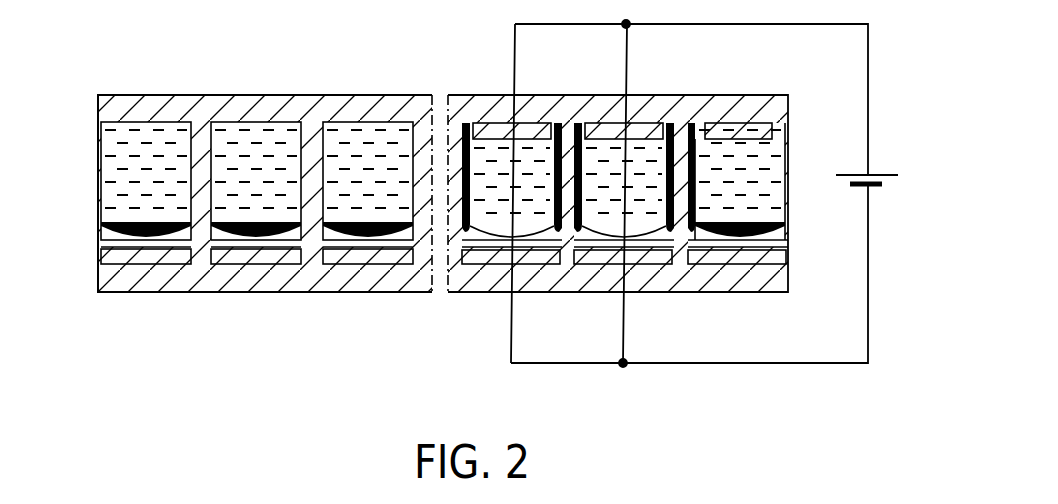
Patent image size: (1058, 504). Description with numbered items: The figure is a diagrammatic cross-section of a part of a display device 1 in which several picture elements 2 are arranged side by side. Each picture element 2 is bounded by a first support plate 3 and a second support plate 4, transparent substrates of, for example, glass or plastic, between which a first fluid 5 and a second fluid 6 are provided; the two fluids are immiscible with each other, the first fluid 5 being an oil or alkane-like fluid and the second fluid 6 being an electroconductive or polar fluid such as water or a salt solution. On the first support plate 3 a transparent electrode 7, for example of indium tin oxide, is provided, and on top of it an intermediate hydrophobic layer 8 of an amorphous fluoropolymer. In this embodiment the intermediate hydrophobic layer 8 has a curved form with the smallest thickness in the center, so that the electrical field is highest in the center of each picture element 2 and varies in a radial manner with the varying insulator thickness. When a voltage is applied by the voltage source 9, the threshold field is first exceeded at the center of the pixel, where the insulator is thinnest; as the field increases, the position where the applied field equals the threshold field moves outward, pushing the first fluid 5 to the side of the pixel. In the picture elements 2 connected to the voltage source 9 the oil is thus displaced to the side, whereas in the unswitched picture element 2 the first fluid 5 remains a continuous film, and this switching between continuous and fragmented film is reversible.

The display device 1 is at (114, 330).
The picture element 2 is at (352, 90).
The first support plate 3 is at (163, 283).
The second support plate 4 is at (194, 106).
The first fluid 5 is at (127, 237).
The second fluid 6 is at (286, 135).
The transparent electrode 7 is at (240, 263).
The intermediate hydrophobic layer 8 is at (127, 243).
The voltage source 9 is at (884, 185).